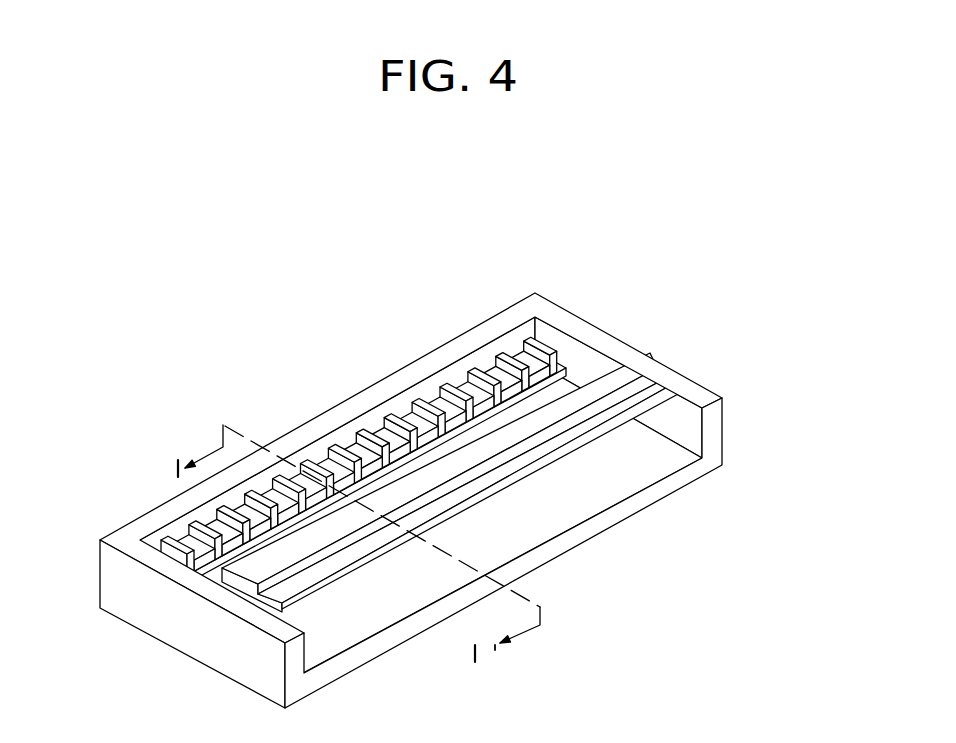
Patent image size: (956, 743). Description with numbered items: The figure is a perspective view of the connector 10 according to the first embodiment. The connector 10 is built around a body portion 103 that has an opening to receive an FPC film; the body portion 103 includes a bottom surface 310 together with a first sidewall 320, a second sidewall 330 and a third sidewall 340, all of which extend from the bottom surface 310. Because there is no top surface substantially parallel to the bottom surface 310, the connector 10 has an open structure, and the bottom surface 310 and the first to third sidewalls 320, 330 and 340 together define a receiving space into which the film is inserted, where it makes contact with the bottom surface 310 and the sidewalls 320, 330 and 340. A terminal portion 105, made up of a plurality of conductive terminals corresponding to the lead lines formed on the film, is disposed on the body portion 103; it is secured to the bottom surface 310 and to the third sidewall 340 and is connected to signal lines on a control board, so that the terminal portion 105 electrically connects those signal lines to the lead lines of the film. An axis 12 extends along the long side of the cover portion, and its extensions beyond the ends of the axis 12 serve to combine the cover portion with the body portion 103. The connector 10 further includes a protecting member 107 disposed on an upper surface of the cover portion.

The connector 10 is at (441, 483).
The axis 12 is at (190, 564).
The body portion 103 is at (441, 483).
The terminal portion 105 is at (517, 345).
The protecting member 107 is at (622, 358).
The bottom surface 310 is at (357, 623).
The first sidewall 320 is at (263, 622).
The second sidewall 330 is at (692, 414).
The third sidewall 340 is at (461, 356).